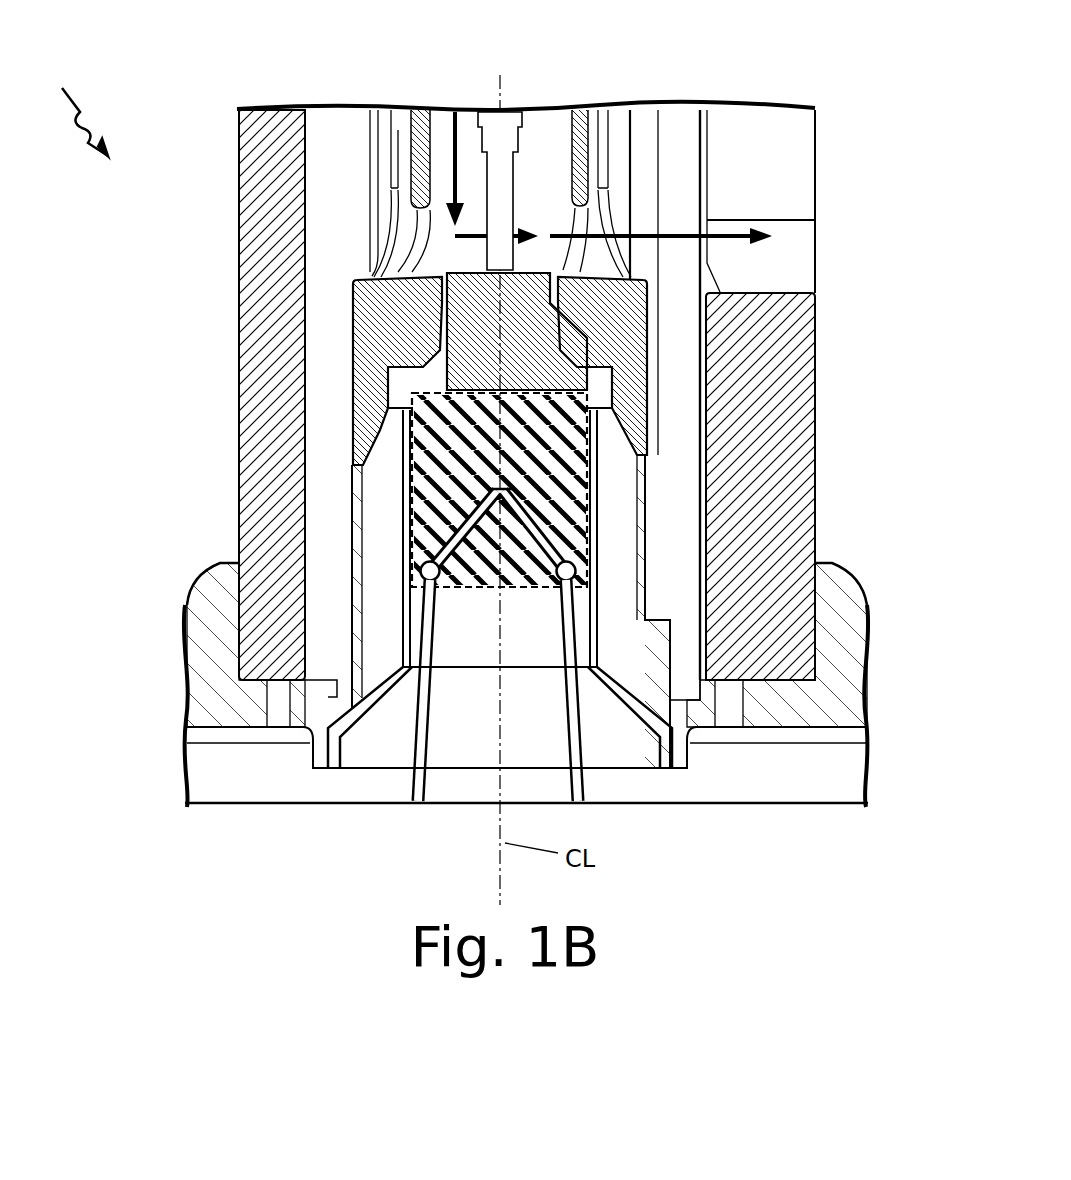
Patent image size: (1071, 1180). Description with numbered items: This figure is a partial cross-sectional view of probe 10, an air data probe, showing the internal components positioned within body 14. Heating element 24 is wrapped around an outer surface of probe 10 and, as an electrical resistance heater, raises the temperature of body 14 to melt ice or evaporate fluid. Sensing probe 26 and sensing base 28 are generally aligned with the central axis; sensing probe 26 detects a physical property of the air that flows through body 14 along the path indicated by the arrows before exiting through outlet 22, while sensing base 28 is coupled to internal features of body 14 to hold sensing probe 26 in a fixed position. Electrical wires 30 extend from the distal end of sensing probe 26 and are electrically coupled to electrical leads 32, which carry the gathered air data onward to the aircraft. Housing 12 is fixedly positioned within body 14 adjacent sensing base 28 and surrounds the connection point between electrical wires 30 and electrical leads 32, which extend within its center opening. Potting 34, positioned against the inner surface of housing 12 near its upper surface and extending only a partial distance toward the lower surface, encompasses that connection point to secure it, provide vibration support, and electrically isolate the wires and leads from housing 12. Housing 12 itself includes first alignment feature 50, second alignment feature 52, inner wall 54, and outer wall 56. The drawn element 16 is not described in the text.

The probe 10 is at (70, 113).
The housing 12 is at (340, 533).
The body 14 is at (322, 131).
The base flange 16 is at (207, 681).
The outlet 22 is at (787, 260).
The heating element 24 is at (260, 372).
The sensing probe 26 is at (510, 178).
The sensing base 28 is at (535, 348).
The electrical wires 30 is at (548, 536).
The electrical leads 32 is at (432, 648).
The potting 34 is at (588, 401).
The first alignment feature 50 is at (610, 452).
The second alignment feature 52 is at (653, 657).
The inner wall 54 is at (408, 498).
The outer wall 56 is at (352, 517).